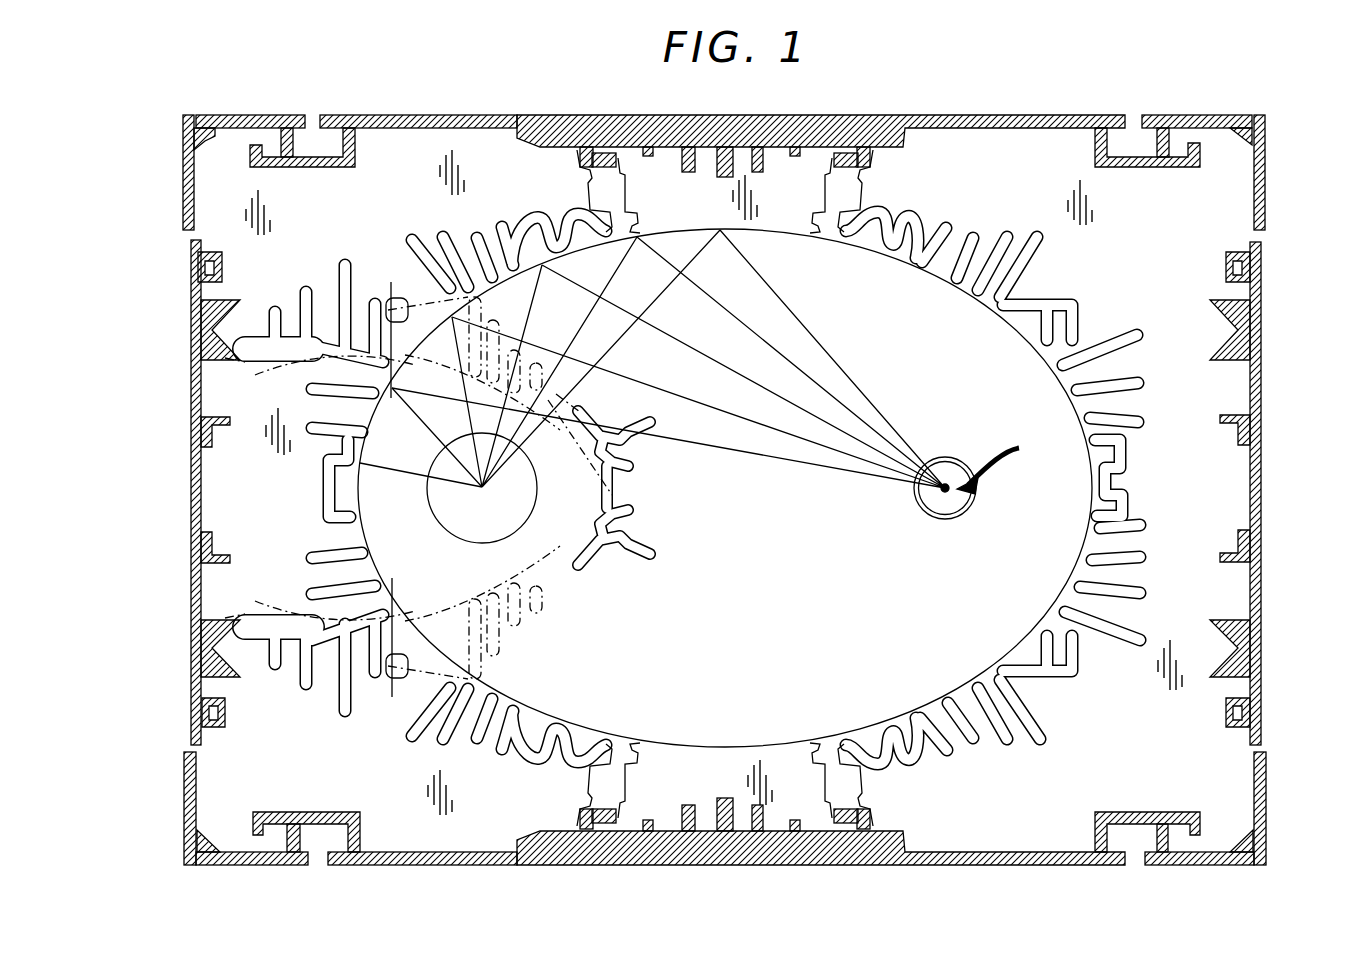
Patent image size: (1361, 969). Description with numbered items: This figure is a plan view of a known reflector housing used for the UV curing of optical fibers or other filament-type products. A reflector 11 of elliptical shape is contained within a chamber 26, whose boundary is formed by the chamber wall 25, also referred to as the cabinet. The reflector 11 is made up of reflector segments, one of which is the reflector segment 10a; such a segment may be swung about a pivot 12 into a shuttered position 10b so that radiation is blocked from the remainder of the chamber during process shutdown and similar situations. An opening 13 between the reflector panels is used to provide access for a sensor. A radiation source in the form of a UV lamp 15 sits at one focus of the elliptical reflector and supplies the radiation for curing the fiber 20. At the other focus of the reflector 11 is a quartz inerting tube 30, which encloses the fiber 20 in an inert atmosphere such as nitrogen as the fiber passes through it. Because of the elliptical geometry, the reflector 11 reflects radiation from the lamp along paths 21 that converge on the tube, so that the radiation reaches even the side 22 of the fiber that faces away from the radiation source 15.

The reflector segment 10a is at (410, 237).
The shuttered position 10b is at (478, 298).
The reflector 11 is at (913, 710).
The pivot 12 is at (392, 690).
The opening 13 is at (697, 783).
The UV lamp 15 is at (455, 508).
The fiber 20 is at (940, 482).
The paths 21 is at (835, 420).
The side of the fiber 22 is at (998, 459).
The chamber wall 25 is at (580, 842).
The chamber 26 is at (1198, 802).
The quartz inerting tube 30 is at (958, 515).